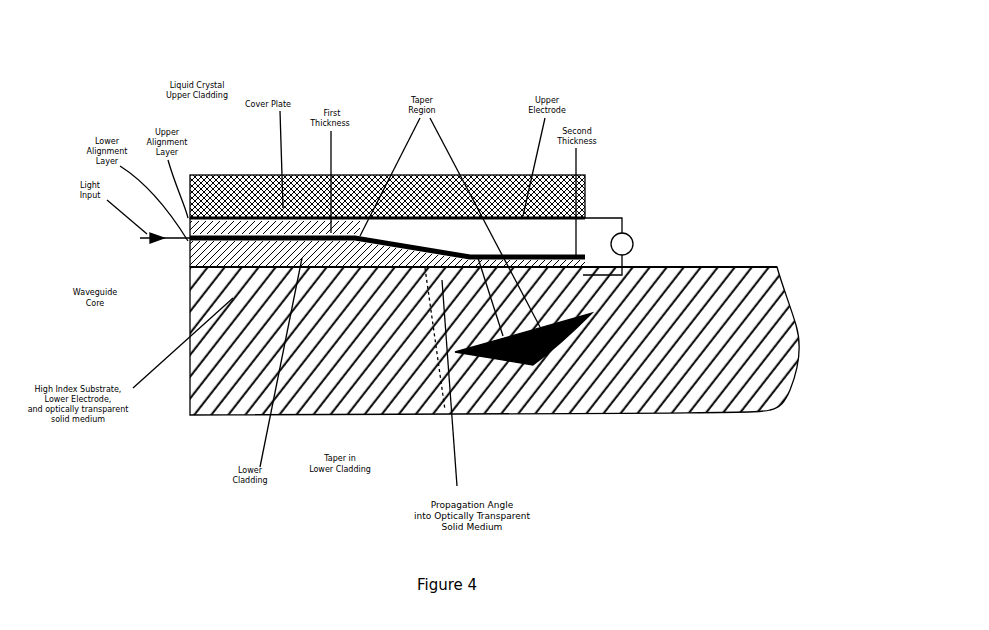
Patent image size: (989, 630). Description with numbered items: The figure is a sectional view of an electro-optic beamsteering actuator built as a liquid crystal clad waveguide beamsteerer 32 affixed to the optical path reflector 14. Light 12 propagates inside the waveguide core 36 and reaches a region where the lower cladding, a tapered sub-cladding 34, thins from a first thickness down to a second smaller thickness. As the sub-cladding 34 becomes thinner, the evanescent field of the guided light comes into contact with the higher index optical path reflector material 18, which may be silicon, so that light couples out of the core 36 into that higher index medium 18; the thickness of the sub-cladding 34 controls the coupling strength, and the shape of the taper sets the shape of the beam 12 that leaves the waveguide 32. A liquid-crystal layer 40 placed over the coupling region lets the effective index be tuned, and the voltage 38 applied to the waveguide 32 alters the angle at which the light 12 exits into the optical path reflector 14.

The light beam 12 is at (535, 365).
The optical path reflector 14 is at (763, 332).
The higher index optical path reflector material 18 is at (760, 373).
The electro-optic beamsteerer 32 is at (335, 266).
The tapered sub-cladding 34 is at (405, 265).
The waveguide core 36 is at (188, 240).
The voltage 38 is at (627, 233).
The liquid-crystal layer 40 is at (220, 215).